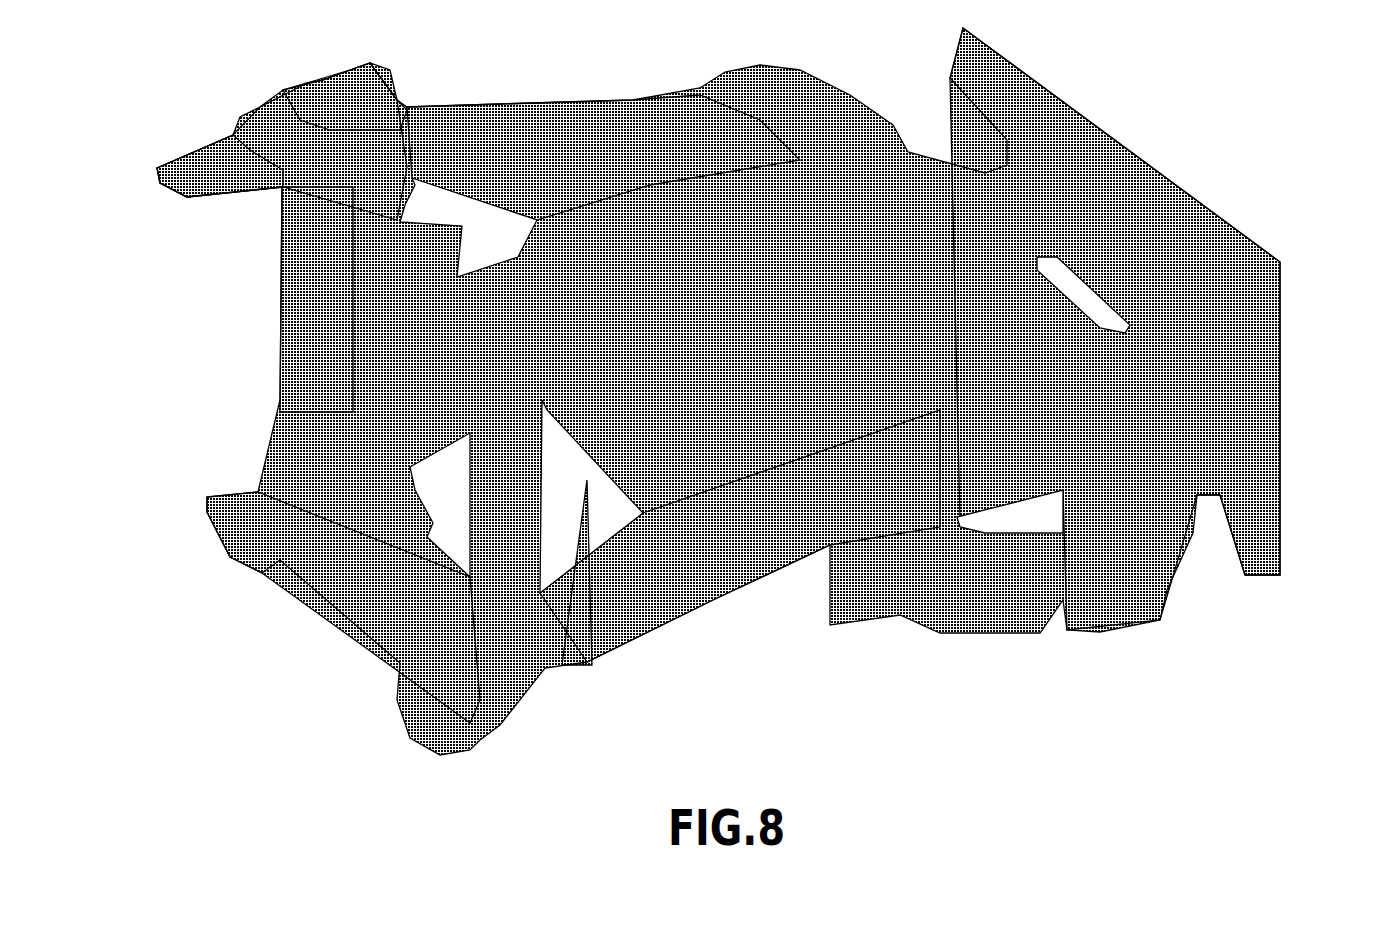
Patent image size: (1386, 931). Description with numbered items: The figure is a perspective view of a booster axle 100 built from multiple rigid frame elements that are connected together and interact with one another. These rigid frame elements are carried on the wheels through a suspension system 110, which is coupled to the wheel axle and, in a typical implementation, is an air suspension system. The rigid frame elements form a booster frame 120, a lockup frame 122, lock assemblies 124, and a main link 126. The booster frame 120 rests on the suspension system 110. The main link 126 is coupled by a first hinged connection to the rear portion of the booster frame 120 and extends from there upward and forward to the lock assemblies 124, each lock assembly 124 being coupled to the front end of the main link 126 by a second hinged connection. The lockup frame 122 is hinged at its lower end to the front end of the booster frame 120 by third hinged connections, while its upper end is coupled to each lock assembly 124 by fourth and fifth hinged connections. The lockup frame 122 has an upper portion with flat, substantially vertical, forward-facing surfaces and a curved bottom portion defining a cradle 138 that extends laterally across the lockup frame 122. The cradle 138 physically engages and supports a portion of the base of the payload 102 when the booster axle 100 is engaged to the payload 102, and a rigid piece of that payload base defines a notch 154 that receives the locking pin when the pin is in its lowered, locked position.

The booster axle 100 is at (1268, 98).
The payload 102 is at (160, 150).
The suspension system 110 is at (1255, 648).
The booster frame 120 is at (708, 600).
The lockup frame 122 is at (278, 376).
The lock assemblies 124 is at (340, 68).
The main link 126 is at (508, 100).
The cradle 138 is at (315, 605).
The notch 154 is at (232, 137).